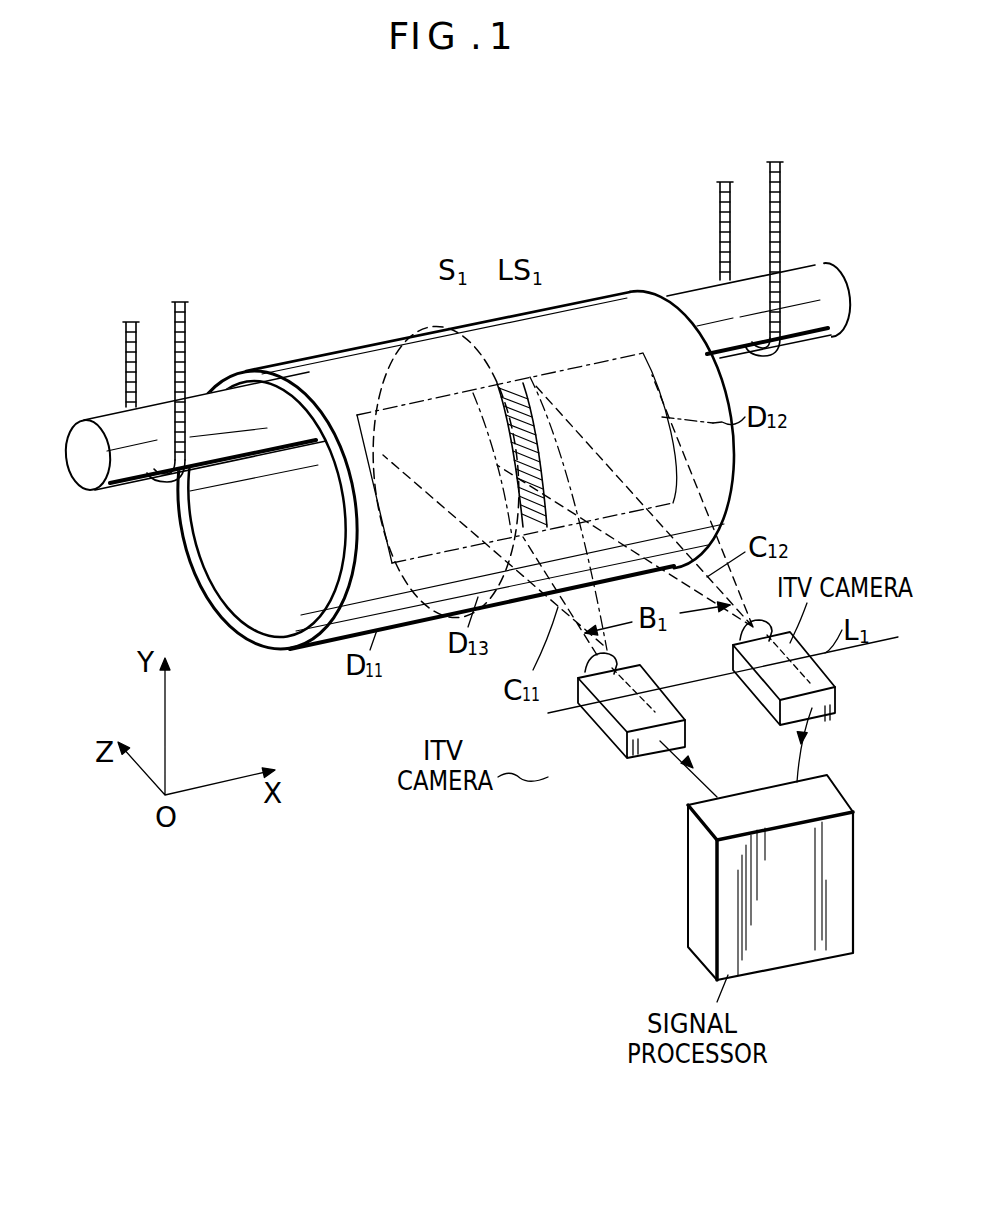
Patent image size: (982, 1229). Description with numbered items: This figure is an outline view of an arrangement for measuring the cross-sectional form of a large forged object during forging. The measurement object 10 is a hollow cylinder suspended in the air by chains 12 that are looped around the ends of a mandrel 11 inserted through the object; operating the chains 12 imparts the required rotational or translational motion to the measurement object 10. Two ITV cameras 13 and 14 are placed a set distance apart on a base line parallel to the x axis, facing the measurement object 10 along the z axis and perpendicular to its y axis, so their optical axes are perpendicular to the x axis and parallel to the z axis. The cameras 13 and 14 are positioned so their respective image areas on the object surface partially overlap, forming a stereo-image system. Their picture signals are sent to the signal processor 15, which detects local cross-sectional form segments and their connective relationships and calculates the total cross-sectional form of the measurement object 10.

The measurement object 10 is at (307, 357).
The mandrel 11 is at (121, 491).
The chains 12 is at (190, 312).
The ITV camera 13 is at (612, 742).
The ITV camera 14 is at (872, 682).
The signal processor 15 is at (688, 878).